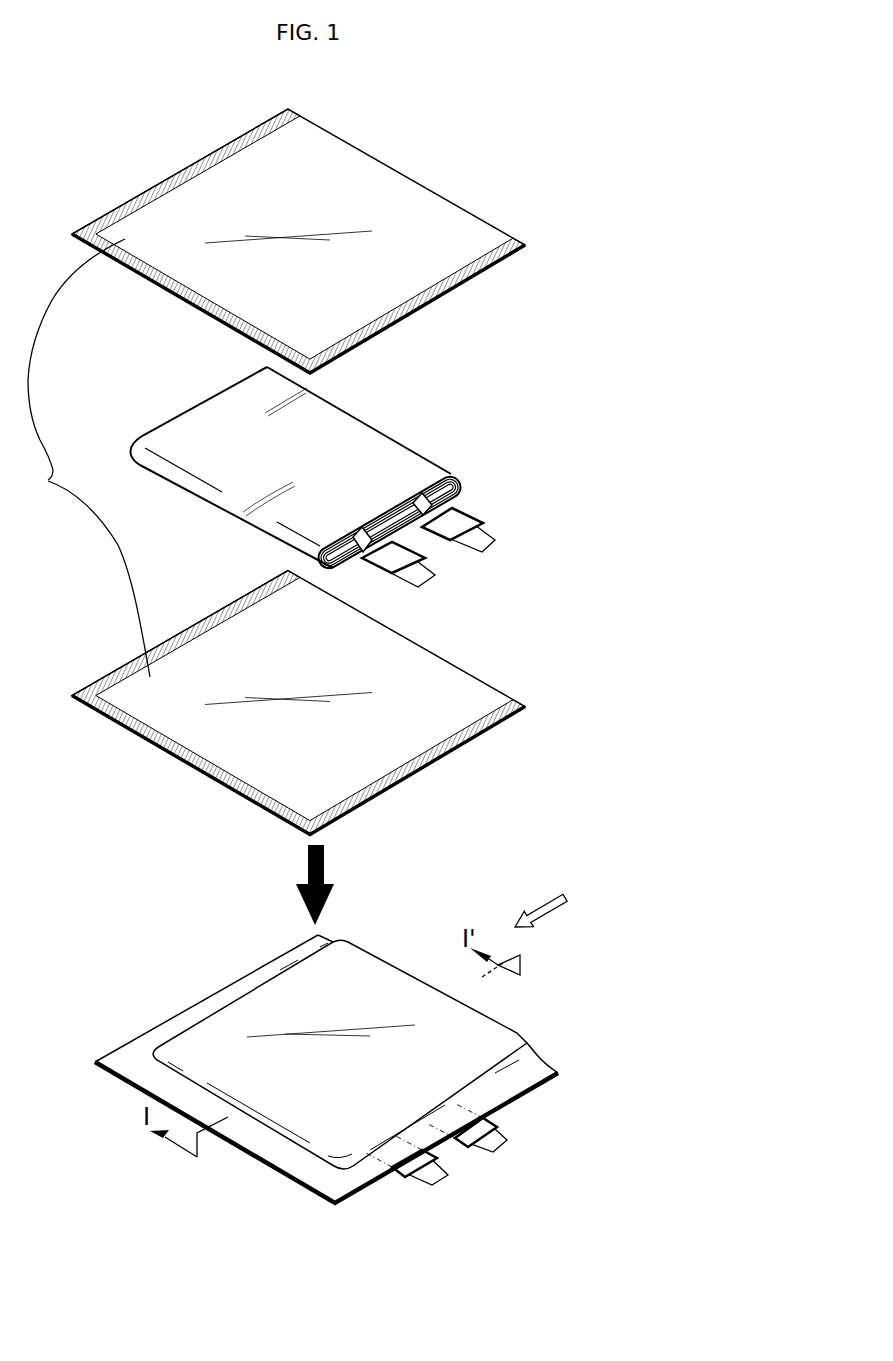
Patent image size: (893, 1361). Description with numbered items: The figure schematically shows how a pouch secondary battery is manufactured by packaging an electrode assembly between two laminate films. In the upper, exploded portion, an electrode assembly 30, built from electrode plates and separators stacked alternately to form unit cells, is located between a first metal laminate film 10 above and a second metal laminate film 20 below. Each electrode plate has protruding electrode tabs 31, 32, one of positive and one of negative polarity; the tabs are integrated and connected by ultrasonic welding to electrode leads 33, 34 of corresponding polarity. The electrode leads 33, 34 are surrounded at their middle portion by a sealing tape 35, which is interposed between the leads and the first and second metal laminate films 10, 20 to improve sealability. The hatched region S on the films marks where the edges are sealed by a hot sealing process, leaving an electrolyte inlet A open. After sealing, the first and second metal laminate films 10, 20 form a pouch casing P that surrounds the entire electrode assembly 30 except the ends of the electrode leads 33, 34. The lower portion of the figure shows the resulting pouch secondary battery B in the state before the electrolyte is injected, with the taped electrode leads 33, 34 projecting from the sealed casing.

The first metal laminate film 10 is at (453, 215).
The second metal laminate film 20 is at (470, 683).
The electrode assembly 30 is at (157, 387).
The electrode tab 31 is at (358, 528).
The electrode tab 32 is at (421, 493).
The electrode lead 33 is at (423, 578).
The electrode lead 34 is at (487, 541).
The sealing tape 35 is at (478, 517).
The sealing region S is at (255, 135).
The pouch casing P is at (89, 458).
The pouch secondary battery B is at (409, 927).
The electrolyte inlet A is at (552, 898).